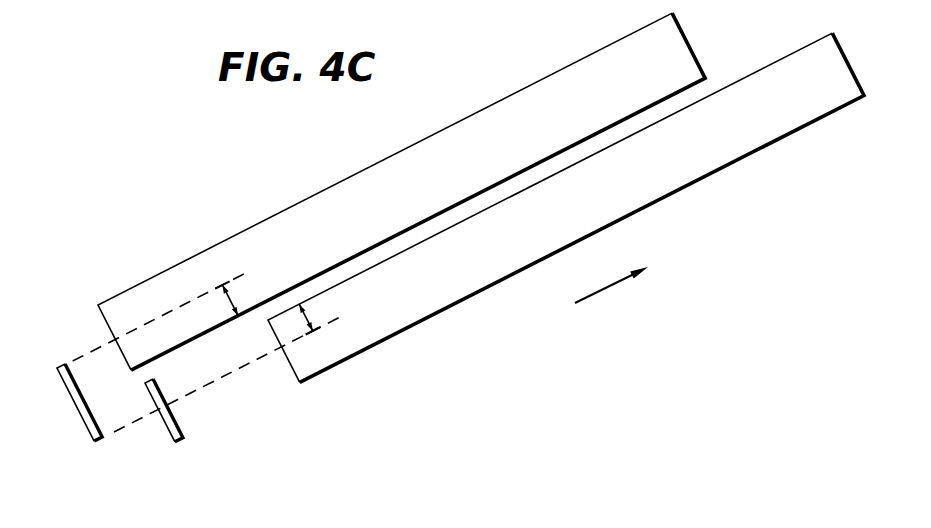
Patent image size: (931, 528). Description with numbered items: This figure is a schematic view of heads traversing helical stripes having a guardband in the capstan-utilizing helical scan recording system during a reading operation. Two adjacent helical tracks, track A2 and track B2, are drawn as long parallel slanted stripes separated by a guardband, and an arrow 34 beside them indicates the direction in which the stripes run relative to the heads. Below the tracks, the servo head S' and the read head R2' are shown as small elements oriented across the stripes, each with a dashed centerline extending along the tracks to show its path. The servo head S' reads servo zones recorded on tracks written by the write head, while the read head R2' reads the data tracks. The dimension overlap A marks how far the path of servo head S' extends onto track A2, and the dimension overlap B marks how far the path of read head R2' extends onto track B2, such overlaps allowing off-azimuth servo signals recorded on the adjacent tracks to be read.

The track A2 is at (456, 181).
The track B2 is at (529, 245).
The direction of displacement 34 is at (603, 288).
The servo head S' is at (69, 402).
The read head R2' is at (193, 413).
The overlap A is at (229, 299).
The overlap B is at (309, 318).